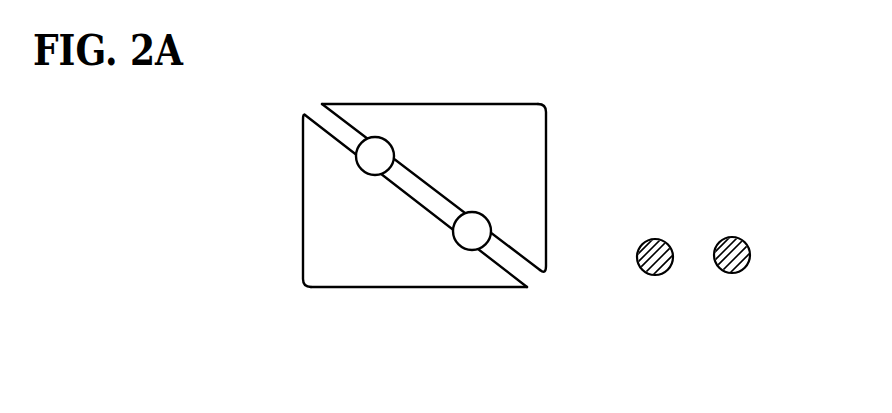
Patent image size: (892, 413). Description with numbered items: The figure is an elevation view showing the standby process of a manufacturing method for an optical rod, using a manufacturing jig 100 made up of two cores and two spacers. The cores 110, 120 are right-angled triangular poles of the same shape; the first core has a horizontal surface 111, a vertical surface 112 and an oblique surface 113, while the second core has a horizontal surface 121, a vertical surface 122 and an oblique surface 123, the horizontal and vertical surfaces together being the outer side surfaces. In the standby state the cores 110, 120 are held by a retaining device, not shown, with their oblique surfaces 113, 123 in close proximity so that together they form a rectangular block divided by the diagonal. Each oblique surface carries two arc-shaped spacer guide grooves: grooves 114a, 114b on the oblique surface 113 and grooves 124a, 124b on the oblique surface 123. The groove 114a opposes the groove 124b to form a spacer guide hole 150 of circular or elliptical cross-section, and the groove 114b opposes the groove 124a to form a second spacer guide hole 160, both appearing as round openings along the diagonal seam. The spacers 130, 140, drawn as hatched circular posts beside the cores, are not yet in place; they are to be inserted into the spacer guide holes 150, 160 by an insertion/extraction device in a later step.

The manufacturing jig 100 is at (713, 172).
The core 110 is at (470, 120).
The horizontal surface 111 is at (512, 104).
The vertical surface 112 is at (547, 133).
The oblique surface 113 is at (443, 198).
The spacer guide groove 114a is at (361, 138).
The spacer guide groove 114b is at (491, 226).
The core 120 is at (393, 268).
The horizontal surface 121 is at (333, 288).
The vertical surface 122 is at (299, 250).
The oblique surface 123 is at (390, 181).
The spacer guide groove 124a is at (461, 248).
The spacer guide groove 124b is at (358, 166).
The spacer 130 is at (658, 275).
The spacer 140 is at (737, 275).
The spacer guide hole 150 is at (389, 142).
The spacer guide hole 160 is at (477, 240).